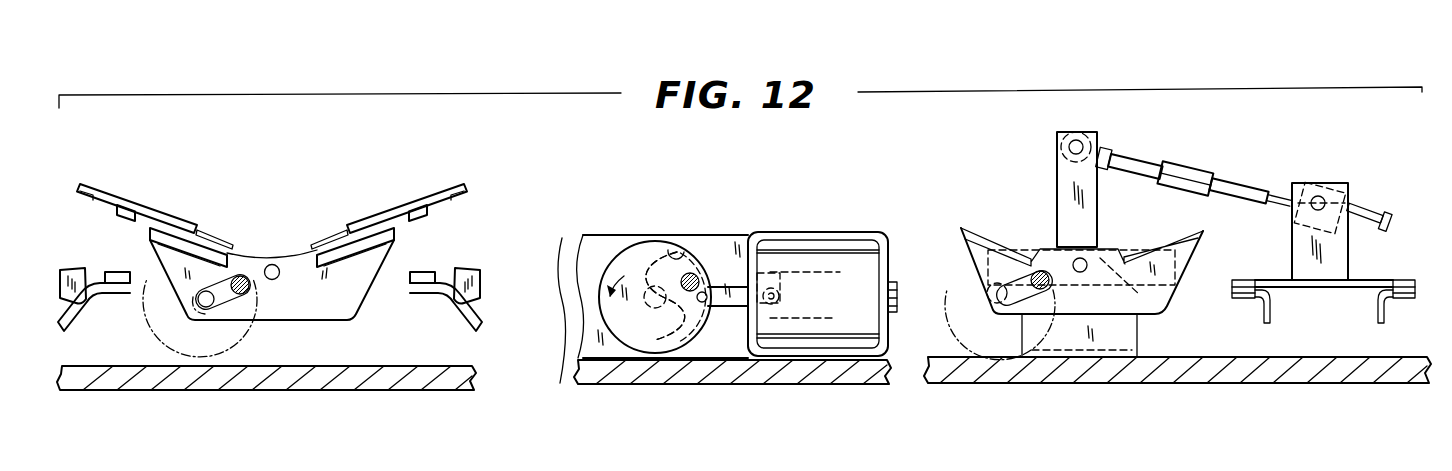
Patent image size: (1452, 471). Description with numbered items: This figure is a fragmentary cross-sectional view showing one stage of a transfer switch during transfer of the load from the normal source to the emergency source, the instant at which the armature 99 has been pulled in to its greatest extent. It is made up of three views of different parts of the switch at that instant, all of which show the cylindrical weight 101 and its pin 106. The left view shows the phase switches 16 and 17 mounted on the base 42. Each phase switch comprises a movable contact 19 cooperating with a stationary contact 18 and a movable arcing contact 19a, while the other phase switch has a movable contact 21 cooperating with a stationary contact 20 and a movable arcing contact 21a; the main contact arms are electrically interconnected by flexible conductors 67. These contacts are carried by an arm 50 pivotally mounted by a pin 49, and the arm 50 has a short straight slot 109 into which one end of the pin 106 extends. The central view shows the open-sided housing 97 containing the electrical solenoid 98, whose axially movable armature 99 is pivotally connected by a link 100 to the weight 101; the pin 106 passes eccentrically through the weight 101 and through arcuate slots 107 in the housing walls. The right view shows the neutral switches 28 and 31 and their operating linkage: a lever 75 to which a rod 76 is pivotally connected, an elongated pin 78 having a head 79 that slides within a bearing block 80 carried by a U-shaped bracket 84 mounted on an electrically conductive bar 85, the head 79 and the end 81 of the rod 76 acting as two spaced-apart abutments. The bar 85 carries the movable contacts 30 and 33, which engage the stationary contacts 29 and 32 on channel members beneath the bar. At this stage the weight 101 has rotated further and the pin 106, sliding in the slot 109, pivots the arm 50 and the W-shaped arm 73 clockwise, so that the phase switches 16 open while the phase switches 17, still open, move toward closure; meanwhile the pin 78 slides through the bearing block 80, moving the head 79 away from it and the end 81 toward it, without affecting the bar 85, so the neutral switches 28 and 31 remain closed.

The phase switch 16 is at (68, 232).
The phase switch 17 is at (486, 231).
The stationary contact 18 is at (116, 272).
The movable contact 19 is at (125, 217).
The movable arcing contact 19a is at (102, 186).
The stationary contact 20 is at (443, 265).
The movable contact 21 is at (415, 209).
The movable arcing contact 21a is at (455, 186).
The neutral switch 28 is at (1220, 295).
The stationary contact 29 is at (1245, 296).
The movable contact 30 is at (1238, 280).
The neutral switch 31 is at (1432, 281).
The stationary contact 32 is at (1402, 296).
The movable contact 33 is at (1408, 280).
The base 42 is at (313, 386).
The pin 49 is at (275, 265).
The arm 50 is at (357, 302).
The flexible conductor 67 is at (247, 257).
The W-shaped arm 73 is at (1197, 255).
The lever 75 is at (1057, 172).
The rod 76 is at (1141, 152).
The elongated pin 78 is at (1365, 209).
The head 79 is at (1392, 217).
The bearing block 80 is at (1330, 183).
The end of rod 81 is at (1270, 193).
The U-shaped bracket 84 is at (1346, 240).
The electrically conductive bar 85 is at (1377, 268).
The housing 97 is at (867, 231).
The solenoid 98 is at (833, 250).
The armature 99 is at (788, 270).
The link 100 is at (729, 307).
The cylindrical weight 101 is at (158, 338).
The pin 106 is at (249, 276).
The arcuate slot 107 is at (668, 245).
The slot 109 is at (220, 300).